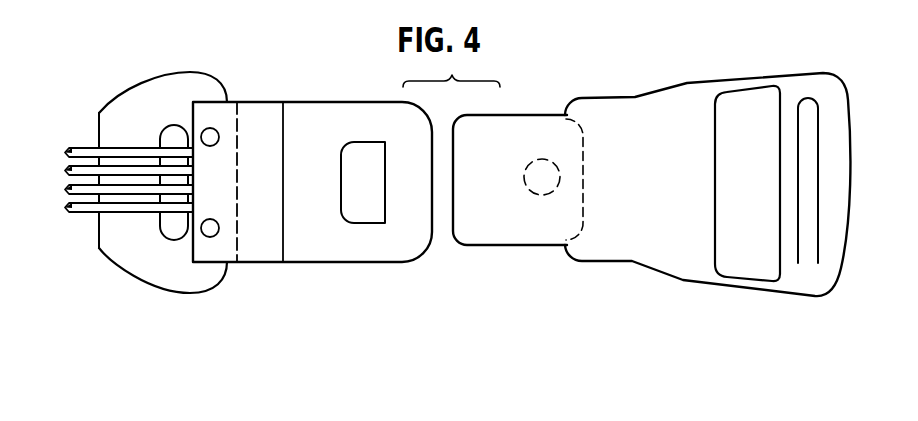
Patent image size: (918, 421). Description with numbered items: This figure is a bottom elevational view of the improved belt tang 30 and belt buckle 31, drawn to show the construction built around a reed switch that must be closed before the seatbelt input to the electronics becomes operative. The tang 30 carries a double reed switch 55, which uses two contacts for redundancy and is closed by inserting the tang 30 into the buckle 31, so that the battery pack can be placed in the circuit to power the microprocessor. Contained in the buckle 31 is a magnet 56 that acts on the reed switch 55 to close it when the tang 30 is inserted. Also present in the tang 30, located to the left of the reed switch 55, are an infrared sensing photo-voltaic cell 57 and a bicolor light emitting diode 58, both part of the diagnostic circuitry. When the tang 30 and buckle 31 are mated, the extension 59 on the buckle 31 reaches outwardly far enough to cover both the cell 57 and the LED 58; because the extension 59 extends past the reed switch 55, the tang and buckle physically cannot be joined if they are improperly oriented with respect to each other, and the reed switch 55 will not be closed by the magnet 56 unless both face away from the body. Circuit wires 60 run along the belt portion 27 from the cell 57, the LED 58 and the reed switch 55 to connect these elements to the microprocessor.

The belt portion 27 is at (147, 273).
The tang 30 is at (310, 107).
The buckle 31 is at (594, 105).
The double reed switch 55 is at (267, 158).
The magnet 56 is at (540, 197).
The infrared sensing photo-voltaic cell 57 is at (214, 136).
The bicolor light emitting diode 58 is at (214, 228).
The extension 59 is at (493, 225).
The circuit wires 60 is at (58, 124).